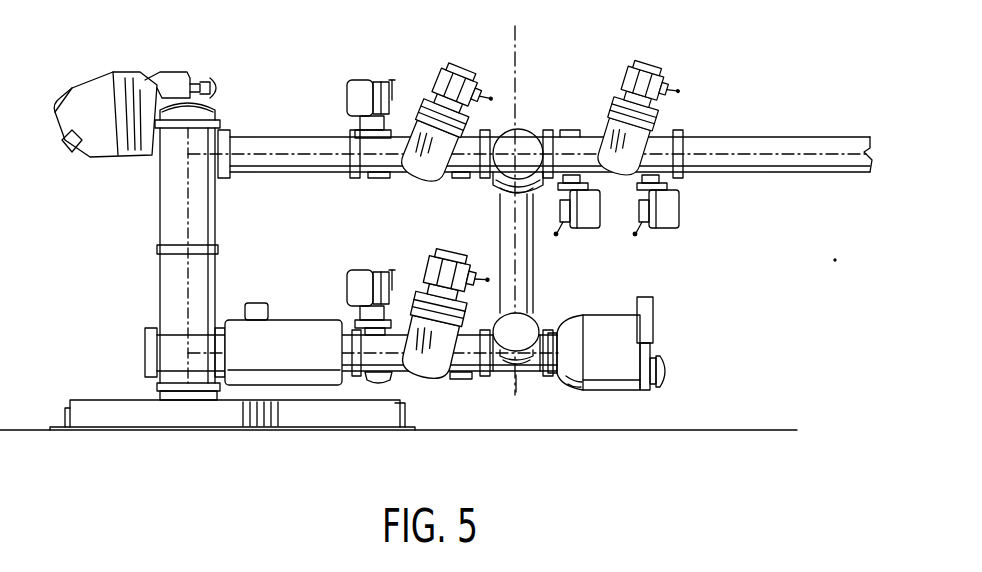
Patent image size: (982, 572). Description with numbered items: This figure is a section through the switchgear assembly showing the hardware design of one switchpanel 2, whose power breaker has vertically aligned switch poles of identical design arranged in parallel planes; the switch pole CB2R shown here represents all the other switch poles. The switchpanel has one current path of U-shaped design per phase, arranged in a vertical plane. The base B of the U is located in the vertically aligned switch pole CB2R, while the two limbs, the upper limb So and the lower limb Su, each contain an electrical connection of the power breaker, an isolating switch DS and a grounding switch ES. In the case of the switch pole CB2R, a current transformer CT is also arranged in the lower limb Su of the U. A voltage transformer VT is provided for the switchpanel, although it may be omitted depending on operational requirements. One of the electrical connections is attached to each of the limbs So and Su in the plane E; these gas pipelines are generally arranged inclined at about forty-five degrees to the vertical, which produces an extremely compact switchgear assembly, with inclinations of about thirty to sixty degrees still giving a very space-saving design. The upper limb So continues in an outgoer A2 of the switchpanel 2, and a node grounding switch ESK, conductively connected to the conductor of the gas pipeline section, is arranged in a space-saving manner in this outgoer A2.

The switch pole CB2R is at (90, 100).
The upper limb So is at (282, 143).
The grounding switch ES is at (360, 93).
The plane E is at (515, 197).
The outgoer A2 is at (767, 152).
The isolating switch DS is at (437, 263).
The base B is at (176, 283).
The current transformer CT is at (275, 363).
The lower limb Su is at (315, 373).
The voltage transformer VT is at (627, 375).
The node grounding switch ESK is at (587, 217).
The switchpanel 2 is at (742, 368).